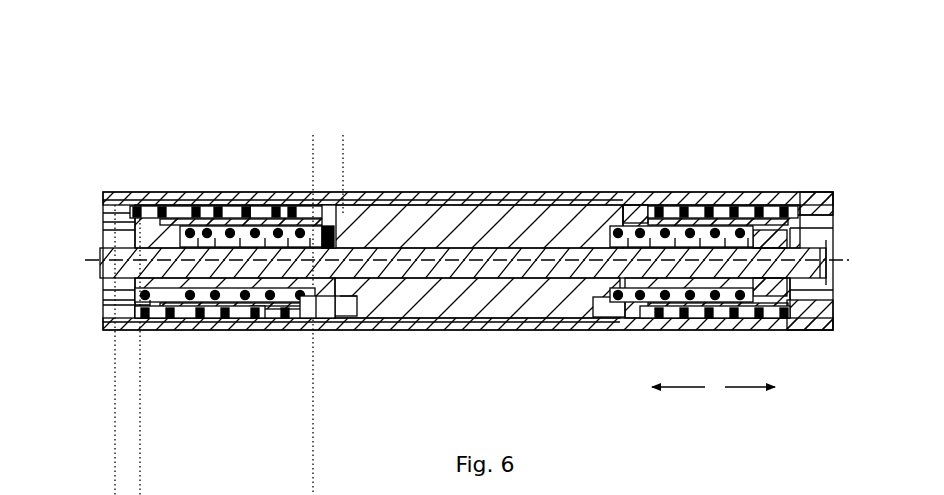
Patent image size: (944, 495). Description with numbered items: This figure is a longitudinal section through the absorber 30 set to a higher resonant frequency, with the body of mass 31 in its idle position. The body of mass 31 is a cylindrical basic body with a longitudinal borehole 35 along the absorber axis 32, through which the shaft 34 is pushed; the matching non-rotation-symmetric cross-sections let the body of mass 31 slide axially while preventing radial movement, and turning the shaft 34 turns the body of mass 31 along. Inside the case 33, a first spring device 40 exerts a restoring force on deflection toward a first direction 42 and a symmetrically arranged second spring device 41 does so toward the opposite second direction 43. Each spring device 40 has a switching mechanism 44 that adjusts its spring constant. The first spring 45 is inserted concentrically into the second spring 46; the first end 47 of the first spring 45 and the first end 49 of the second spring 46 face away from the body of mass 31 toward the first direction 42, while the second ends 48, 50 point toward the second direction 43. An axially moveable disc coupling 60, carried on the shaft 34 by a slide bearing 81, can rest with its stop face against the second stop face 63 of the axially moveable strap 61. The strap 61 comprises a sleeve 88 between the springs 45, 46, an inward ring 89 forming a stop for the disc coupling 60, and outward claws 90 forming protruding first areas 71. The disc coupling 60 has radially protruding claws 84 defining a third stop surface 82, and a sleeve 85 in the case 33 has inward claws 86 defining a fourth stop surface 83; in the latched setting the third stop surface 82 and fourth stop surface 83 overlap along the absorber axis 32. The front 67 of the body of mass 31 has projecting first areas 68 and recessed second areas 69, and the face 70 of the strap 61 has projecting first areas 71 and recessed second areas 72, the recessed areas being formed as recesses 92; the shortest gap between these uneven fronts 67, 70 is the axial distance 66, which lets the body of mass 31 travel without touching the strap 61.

The absorber 30 is at (832, 126).
The body of mass 31 is at (502, 226).
The absorber axis 32 is at (542, 246).
The case 33 is at (562, 262).
The shaft 34 is at (607, 248).
The longitudinal borehole 35 is at (478, 248).
The first spring device 40 is at (100, 68).
The second spring device 41 is at (813, 68).
The first direction 42 is at (694, 395).
The second direction 43 is at (752, 395).
The switching mechanism 44 is at (563, 63).
The first spring 45 is at (235, 305).
The second spring 46 is at (265, 312).
The first end 47 is at (175, 300).
The second end 48 is at (315, 318).
The first end 49 is at (140, 315).
The second end 50 is at (295, 312).
The disc coupling 60 is at (190, 208).
The strap 61 is at (228, 212).
The second stop face 63 is at (138, 215).
The axial distance 66 is at (340, 158).
The front 67 is at (345, 114).
The first areas 68 is at (340, 215).
The second areas 69 is at (358, 238).
The face 70 is at (250, 114).
The first areas 71 is at (296, 222).
The second areas 72 is at (262, 218).
The slide bearing 81 is at (160, 225).
The third stop surface 82 is at (150, 308).
The fourth stop surface 83 is at (120, 320).
The claws 84 is at (160, 300).
The sleeve 85 is at (105, 318).
The claws 86 is at (130, 305).
The sleeve 88 is at (240, 300).
The ring 89 is at (135, 198).
The claws 90 is at (270, 205).
The recesses 92 is at (338, 318).